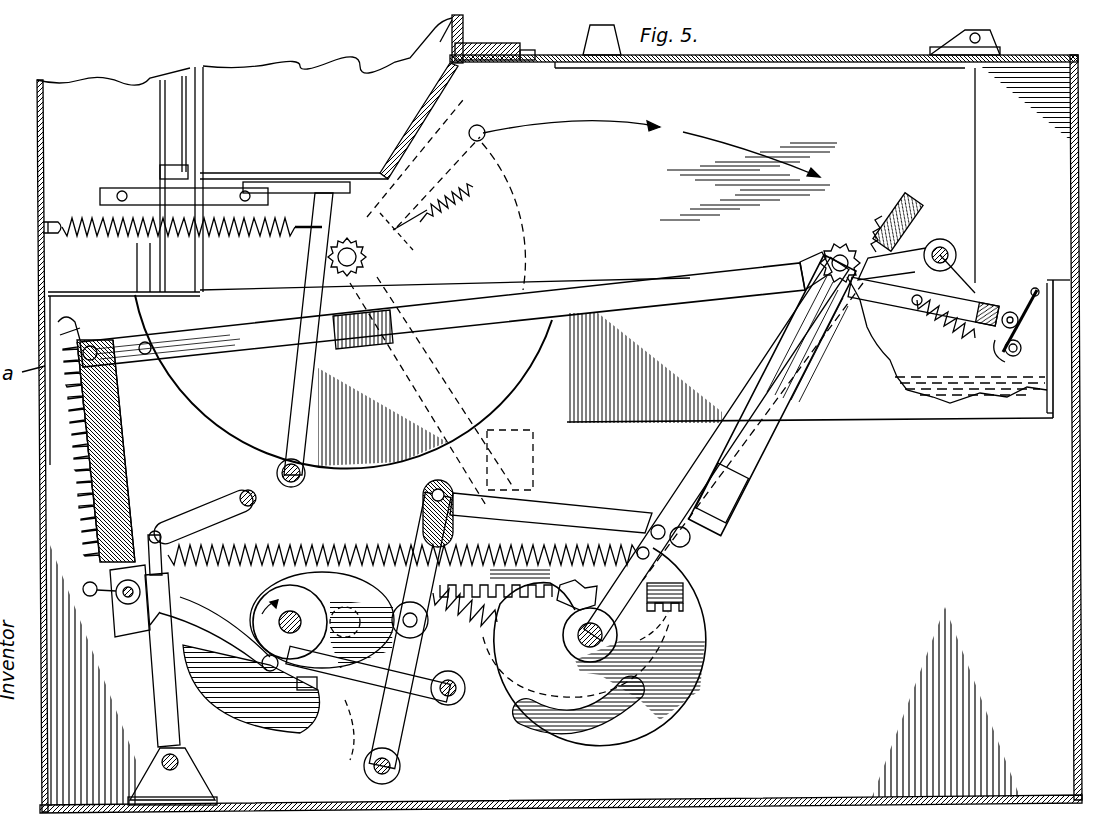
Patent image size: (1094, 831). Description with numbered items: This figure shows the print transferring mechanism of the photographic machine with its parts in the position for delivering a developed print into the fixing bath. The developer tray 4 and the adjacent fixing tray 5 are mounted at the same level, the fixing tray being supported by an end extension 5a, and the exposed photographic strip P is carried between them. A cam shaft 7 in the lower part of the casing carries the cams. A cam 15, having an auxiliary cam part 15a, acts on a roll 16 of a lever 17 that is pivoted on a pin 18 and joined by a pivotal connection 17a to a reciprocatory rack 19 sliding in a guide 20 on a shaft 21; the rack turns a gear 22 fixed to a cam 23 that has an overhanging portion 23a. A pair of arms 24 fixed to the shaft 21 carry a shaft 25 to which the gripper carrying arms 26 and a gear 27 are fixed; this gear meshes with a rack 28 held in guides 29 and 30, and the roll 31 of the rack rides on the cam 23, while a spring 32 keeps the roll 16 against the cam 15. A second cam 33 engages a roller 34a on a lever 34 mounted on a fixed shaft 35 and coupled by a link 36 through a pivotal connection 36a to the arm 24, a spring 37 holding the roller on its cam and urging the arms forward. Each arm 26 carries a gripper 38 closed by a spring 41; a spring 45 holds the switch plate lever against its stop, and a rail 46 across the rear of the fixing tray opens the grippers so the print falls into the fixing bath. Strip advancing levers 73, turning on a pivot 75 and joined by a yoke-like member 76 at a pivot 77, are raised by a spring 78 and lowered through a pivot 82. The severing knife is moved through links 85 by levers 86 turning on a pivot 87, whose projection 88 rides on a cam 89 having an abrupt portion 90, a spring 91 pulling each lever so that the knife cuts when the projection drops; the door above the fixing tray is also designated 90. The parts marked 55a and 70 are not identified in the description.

The developer tray 4 is at (520, 375).
The fixing tray 5 is at (853, 410).
The extension 5a is at (1040, 397).
The cam shaft 7 is at (290, 622).
The cam 15 is at (228, 718).
The auxiliary cam part 15a is at (358, 766).
The roll 16 is at (152, 632).
The lever 17 is at (160, 680).
The pivotal connection 17a is at (152, 532).
The pin 18 is at (183, 761).
The reciprocatory rack 19 is at (692, 592).
The guide 20 is at (680, 566).
The shaft 21 is at (603, 636).
The gear 22 is at (570, 600).
The cam 23 is at (668, 700).
The overhanging portion 23a is at (598, 742).
The arms 24 is at (700, 463).
The shaft 25 is at (840, 250).
The gripper carrying arms 26 is at (972, 282).
The gear 27 is at (822, 252).
The rack 28 is at (870, 202).
The guide 29 is at (748, 500).
The guide 30 is at (415, 245).
The roll 31 is at (692, 535).
The spring 32 is at (425, 630).
The cam 33 is at (332, 722).
The lever 34 is at (400, 722).
The roller 34a is at (449, 678).
The fixed shaft 35 is at (402, 770).
The link 36 is at (568, 508).
The pivotal connection 36a is at (657, 524).
The spring 37 is at (186, 525).
The gripper 38 is at (1024, 323).
The spring 41 is at (940, 327).
The spring 45 is at (87, 215).
The rail 46 is at (1037, 288).
The spring 55a is at (215, 562).
The hook 70 is at (97, 238).
The lever 73 is at (545, 297).
The pivot 75 is at (942, 242).
The yoke-like member 76 is at (122, 446).
The pivot 77 is at (96, 347).
The spring 78 is at (72, 483).
The pivot 82 is at (116, 603).
The links 85 is at (288, 182).
The levers 86 is at (296, 380).
The pivot 87 is at (276, 470).
The projection 88 is at (235, 615).
The cam 89 is at (291, 655).
The abrupt portion 90 is at (320, 605).
The spring 91 is at (228, 237).
The photographic strip P is at (987, 367).